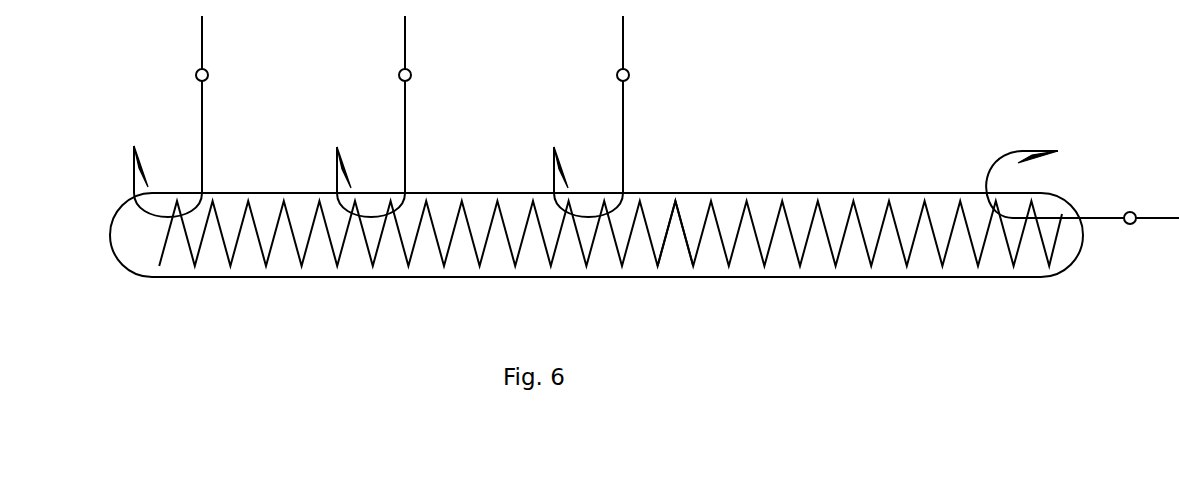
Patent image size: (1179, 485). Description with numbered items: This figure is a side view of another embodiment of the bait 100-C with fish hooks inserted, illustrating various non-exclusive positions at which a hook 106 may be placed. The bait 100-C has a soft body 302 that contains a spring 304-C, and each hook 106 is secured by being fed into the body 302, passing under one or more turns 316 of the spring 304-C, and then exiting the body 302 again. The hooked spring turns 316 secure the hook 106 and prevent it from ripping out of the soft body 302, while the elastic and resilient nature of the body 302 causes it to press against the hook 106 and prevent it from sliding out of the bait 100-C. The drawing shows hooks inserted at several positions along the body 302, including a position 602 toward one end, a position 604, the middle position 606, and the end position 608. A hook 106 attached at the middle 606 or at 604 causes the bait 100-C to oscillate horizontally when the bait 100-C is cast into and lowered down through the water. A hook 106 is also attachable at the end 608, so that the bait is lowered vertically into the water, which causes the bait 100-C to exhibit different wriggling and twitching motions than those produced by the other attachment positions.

The hook 106 is at (203, 130).
The body 302 is at (877, 193).
The spring 304-C is at (833, 250).
The turns 316 is at (710, 200).
The bait 100-C is at (737, 193).
The hook position 602 is at (200, 187).
The hook position 604 is at (403, 187).
The middle hook position 606 is at (615, 183).
The end hook position 608 is at (1092, 220).